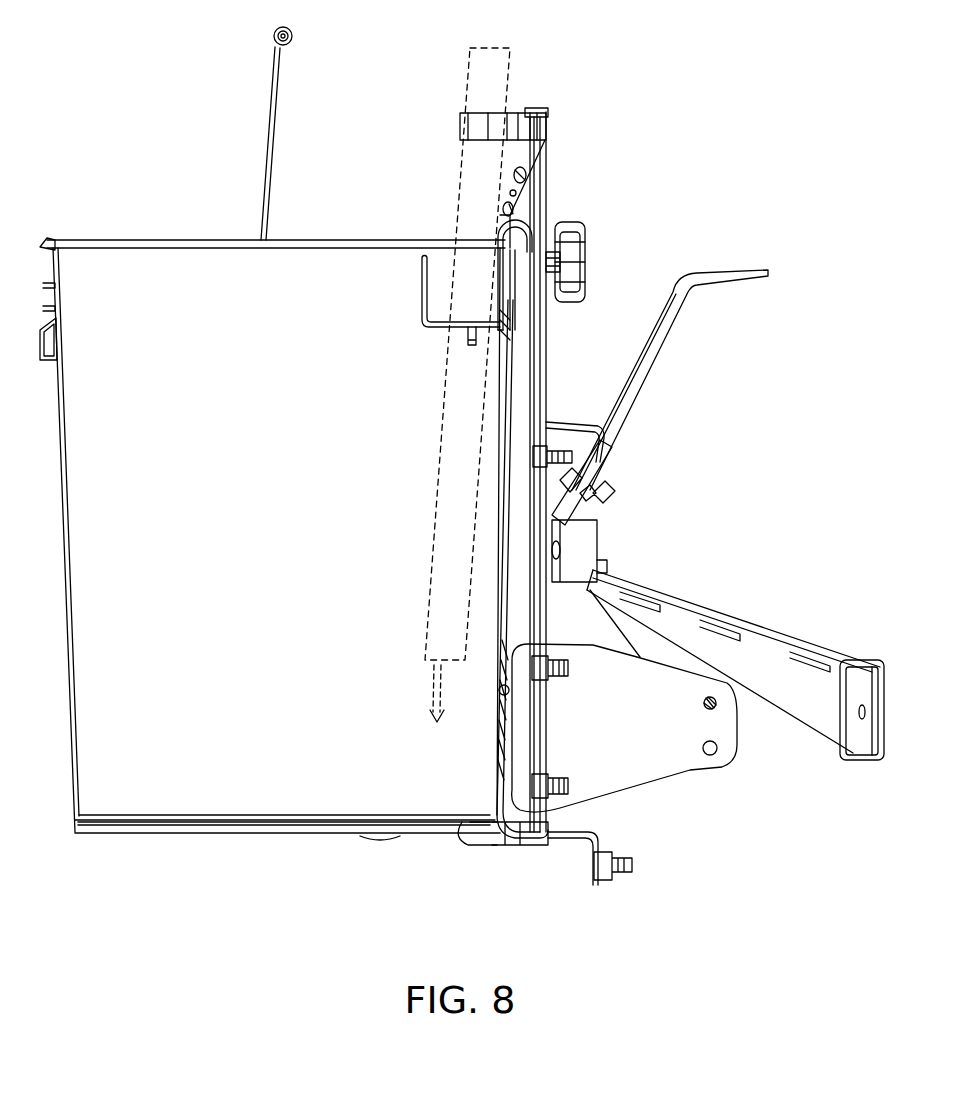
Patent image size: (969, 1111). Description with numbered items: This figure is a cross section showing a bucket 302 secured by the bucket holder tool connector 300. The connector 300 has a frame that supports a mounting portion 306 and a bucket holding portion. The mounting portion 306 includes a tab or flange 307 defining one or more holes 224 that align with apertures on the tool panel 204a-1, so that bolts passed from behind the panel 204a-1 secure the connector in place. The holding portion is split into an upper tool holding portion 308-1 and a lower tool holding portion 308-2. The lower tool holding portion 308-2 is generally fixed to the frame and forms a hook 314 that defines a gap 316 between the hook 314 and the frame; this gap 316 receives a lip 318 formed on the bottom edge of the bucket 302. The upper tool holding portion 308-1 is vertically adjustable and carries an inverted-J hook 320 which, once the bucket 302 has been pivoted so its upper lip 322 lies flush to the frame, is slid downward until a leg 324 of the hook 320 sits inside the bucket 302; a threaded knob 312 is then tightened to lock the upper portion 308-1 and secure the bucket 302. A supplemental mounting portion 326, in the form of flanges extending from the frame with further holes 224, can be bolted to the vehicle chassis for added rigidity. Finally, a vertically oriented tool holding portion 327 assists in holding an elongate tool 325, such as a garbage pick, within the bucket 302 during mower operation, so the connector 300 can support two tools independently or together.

The bucket holder tool connector 300 is at (543, 110).
The bucket 302 is at (315, 243).
The mounting portion 306 is at (567, 428).
The tab or flange 307 is at (598, 428).
The upper tool holding portion 308-1 is at (420, 300).
The lower tool holding portion 308-2 is at (490, 825).
The threaded knob 312 is at (575, 225).
The hook 314 is at (468, 832).
The gap 316 is at (505, 840).
The lip 318 is at (85, 830).
The hook 320 is at (462, 332).
The upper lip 322 is at (50, 240).
The leg 324 is at (497, 295).
The elongate tool 325 is at (470, 115).
The supplemental mounting portion 326 is at (665, 790).
The tool holding portion 327 is at (482, 113).
The hole 224 is at (713, 756).
The tool panel 204a-1 is at (678, 292).